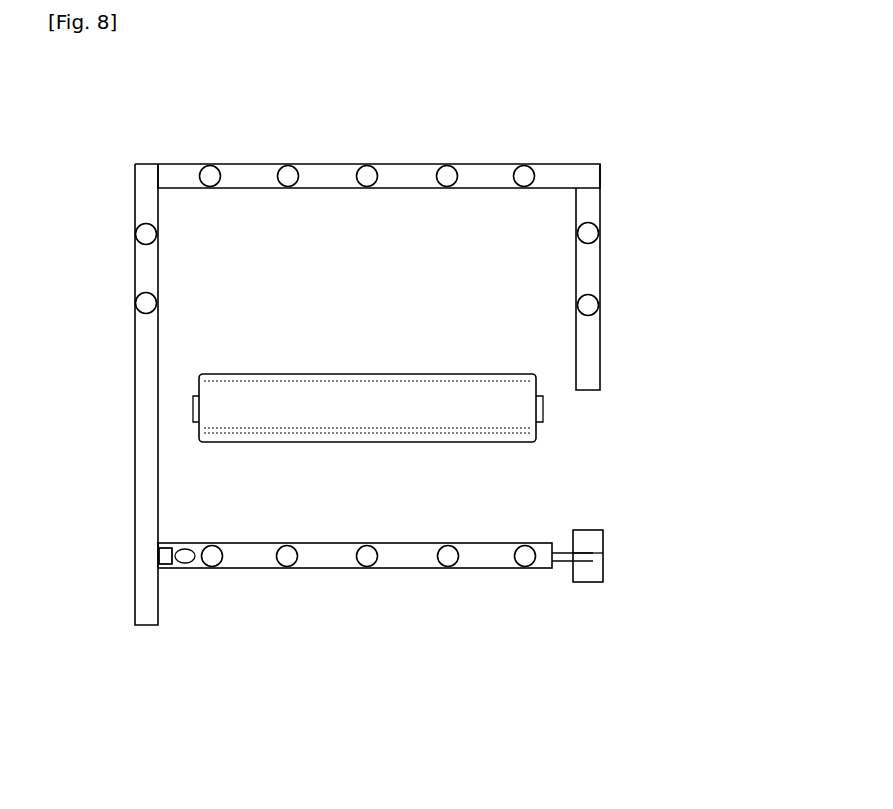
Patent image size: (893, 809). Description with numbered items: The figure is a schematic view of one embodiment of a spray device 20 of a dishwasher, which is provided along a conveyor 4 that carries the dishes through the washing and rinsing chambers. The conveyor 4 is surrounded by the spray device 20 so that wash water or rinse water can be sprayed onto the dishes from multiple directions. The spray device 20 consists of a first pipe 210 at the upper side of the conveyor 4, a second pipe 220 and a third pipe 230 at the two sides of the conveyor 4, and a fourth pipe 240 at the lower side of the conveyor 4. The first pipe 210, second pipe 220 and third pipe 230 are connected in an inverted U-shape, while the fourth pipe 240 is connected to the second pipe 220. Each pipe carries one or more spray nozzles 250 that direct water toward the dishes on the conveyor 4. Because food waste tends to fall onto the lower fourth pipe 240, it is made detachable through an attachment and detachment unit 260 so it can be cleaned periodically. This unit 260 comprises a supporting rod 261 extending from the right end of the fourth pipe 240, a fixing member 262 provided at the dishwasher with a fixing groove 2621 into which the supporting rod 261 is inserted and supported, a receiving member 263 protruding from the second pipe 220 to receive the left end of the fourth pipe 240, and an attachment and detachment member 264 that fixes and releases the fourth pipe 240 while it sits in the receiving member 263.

The spray device 20 is at (588, 125).
The first pipe 210 is at (400, 168).
The second pipe 220 is at (142, 362).
The third pipe 230 is at (597, 268).
The fourth pipe 240 is at (420, 568).
The spray nozzles 250 is at (146, 232).
The attachment and detachment unit 260 is at (718, 757).
The supporting rod 261 is at (560, 562).
The fixing member 262 is at (597, 543).
The fastening hole 2621 is at (600, 558).
The receiving member 263 is at (170, 568).
The attachment and detachment member 264 is at (168, 557).
The conveyor 4 is at (465, 387).